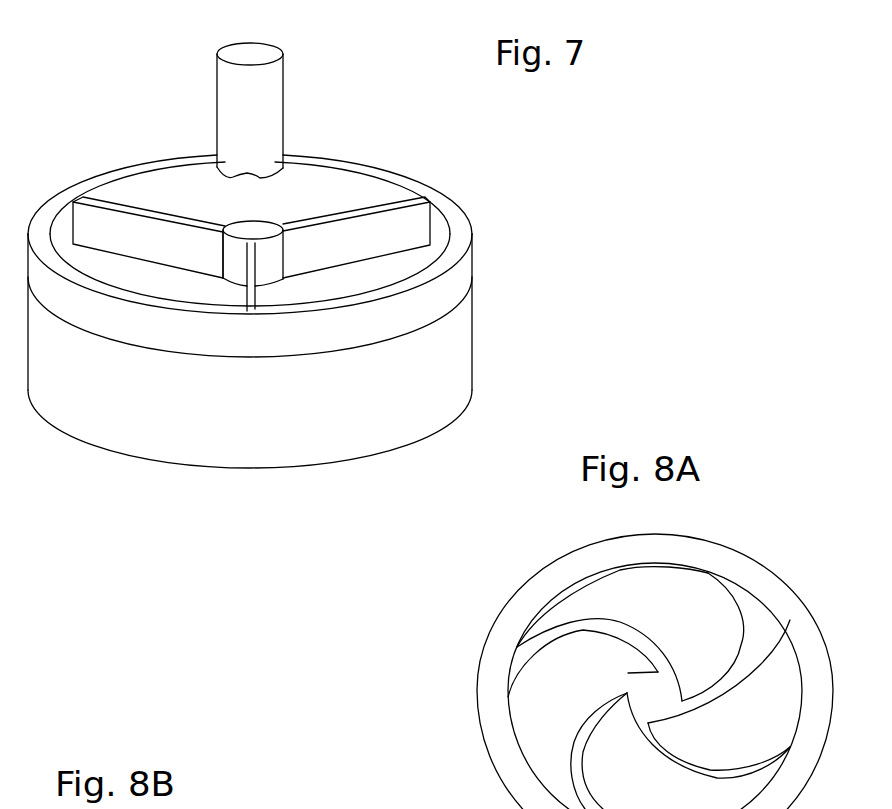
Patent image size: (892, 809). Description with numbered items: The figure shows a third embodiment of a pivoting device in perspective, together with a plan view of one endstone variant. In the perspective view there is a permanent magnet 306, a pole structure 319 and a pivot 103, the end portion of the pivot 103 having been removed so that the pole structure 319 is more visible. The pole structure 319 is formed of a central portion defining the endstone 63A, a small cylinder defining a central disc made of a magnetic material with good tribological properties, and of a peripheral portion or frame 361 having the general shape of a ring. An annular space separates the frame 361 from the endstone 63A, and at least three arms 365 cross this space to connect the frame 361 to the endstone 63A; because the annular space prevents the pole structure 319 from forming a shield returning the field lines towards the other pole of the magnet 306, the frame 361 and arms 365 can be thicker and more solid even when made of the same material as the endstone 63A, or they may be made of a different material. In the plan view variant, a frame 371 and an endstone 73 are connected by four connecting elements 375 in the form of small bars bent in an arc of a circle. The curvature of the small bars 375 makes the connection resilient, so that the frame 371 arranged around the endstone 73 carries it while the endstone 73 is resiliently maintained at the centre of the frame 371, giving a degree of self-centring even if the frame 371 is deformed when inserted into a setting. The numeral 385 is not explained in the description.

In FIG. 7, the pivot 103 is at (295, 140).
In FIG. 7, the pole structure 319 is at (101, 166).
In FIG. 7, the frame 361 is at (470, 226).
In FIG. 7, the permanent magnet 306 is at (160, 480).
In FIG. 7, the endstone 63A is at (253, 242).
In FIG. 7, the arms 365 is at (256, 290).
In FIG. 8A, the frame 371 is at (587, 556).
In FIG. 8A, the connecting elements 375 is at (570, 627).
In FIG. 8A, the endstone 73 is at (653, 697).
In FIG. 8A, the lower vane 385 is at (592, 751).